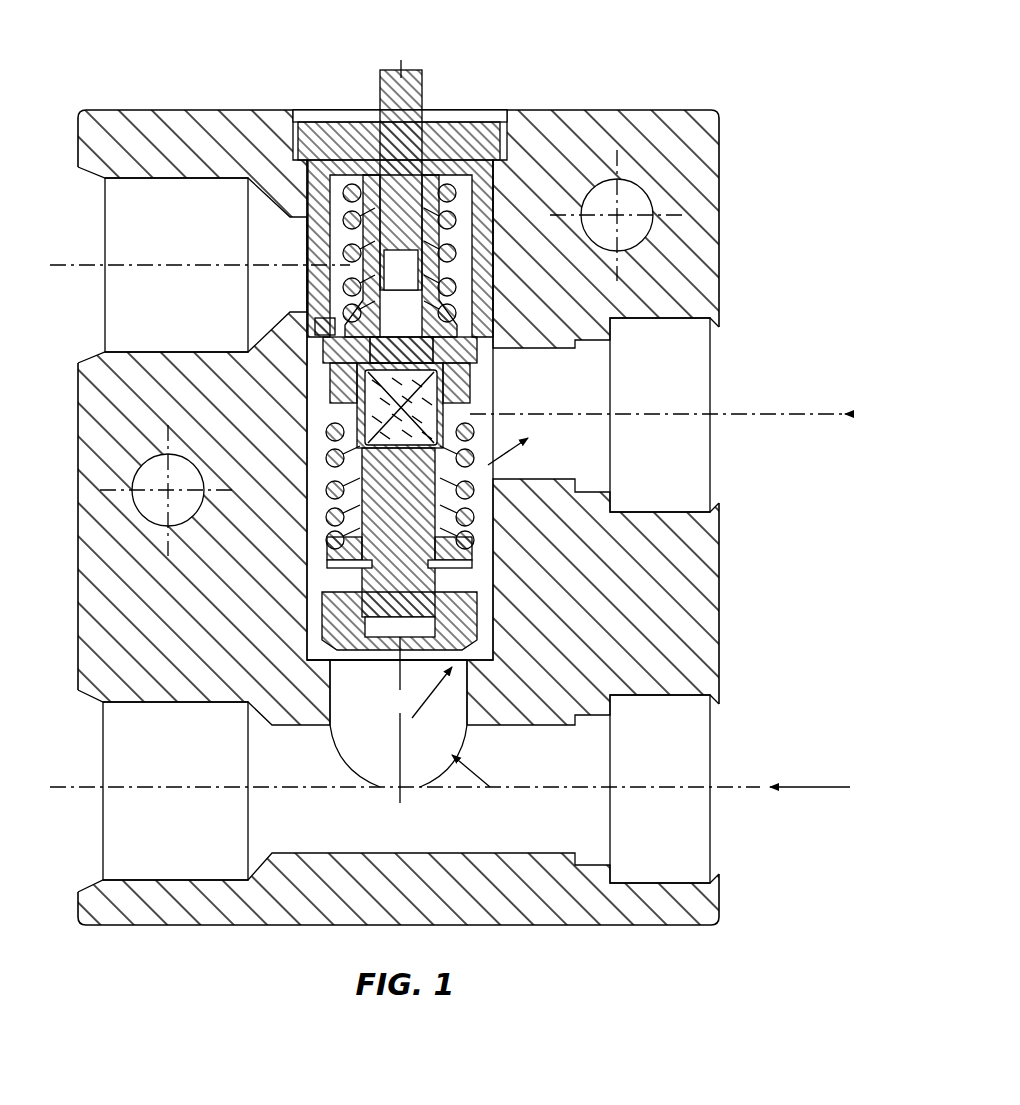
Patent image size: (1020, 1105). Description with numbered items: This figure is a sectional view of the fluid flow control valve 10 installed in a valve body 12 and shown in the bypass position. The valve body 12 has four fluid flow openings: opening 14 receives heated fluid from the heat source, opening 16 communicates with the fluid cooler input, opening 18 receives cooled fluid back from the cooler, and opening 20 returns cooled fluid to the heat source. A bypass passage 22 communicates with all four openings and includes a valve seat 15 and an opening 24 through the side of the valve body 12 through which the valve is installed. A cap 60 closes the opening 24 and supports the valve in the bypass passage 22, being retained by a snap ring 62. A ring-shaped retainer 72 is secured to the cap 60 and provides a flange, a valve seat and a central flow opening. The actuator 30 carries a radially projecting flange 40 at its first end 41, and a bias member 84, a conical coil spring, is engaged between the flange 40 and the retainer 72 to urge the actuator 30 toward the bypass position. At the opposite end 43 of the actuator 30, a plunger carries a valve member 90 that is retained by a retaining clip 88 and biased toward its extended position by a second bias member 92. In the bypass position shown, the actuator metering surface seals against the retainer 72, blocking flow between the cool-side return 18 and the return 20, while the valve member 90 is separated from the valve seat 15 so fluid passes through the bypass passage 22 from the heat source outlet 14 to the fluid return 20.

The fluid flow control valve 10 is at (316, 101).
The valve body 12 is at (612, 130).
The fluid flow opening 14 is at (660, 789).
The valve seat 15 is at (330, 665).
The fluid flow opening 16 is at (175, 791).
The fluid flow opening 18 is at (176, 265).
The fluid flow opening 20 is at (660, 415).
The bypass passage 22 is at (410, 723).
The opening 24 is at (453, 120).
The actuator 30 is at (481, 379).
The flange 40 is at (312, 176).
The first end 41 is at (432, 170).
The opposite end 43 is at (410, 617).
The cap 60 is at (376, 101).
The snap ring 62 is at (343, 120).
The retainer 72 is at (318, 331).
The bias member 84 is at (455, 254).
The retaining clip 88 is at (327, 565).
The valve member 90 is at (478, 606).
The bias member 92 is at (332, 462).